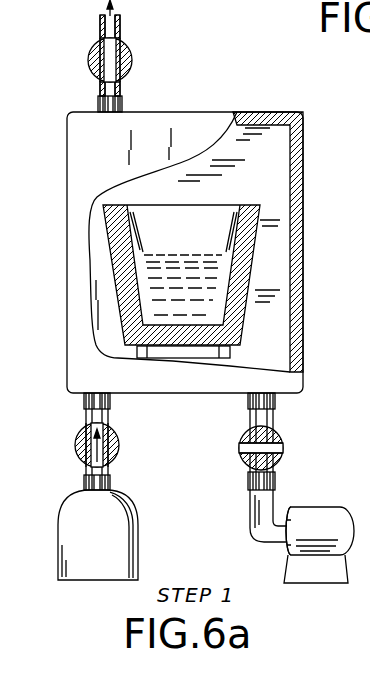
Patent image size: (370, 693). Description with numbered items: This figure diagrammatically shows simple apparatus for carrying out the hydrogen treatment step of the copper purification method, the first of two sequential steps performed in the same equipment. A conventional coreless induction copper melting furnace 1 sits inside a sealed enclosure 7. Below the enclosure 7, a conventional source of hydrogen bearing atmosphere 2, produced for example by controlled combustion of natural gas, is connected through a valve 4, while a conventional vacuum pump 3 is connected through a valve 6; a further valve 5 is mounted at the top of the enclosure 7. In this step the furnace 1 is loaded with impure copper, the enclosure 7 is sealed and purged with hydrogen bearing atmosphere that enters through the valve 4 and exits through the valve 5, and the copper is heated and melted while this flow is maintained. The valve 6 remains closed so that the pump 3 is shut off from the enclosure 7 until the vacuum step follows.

The copper melting furnace 1 is at (254, 269).
The source of hydrogen bearing atmosphere 2 is at (62, 530).
The vacuum pump 3 is at (325, 510).
The valve 4 is at (78, 444).
The valve 5 is at (88, 60).
The valve 6 is at (274, 436).
The enclosure 7 is at (188, 111).